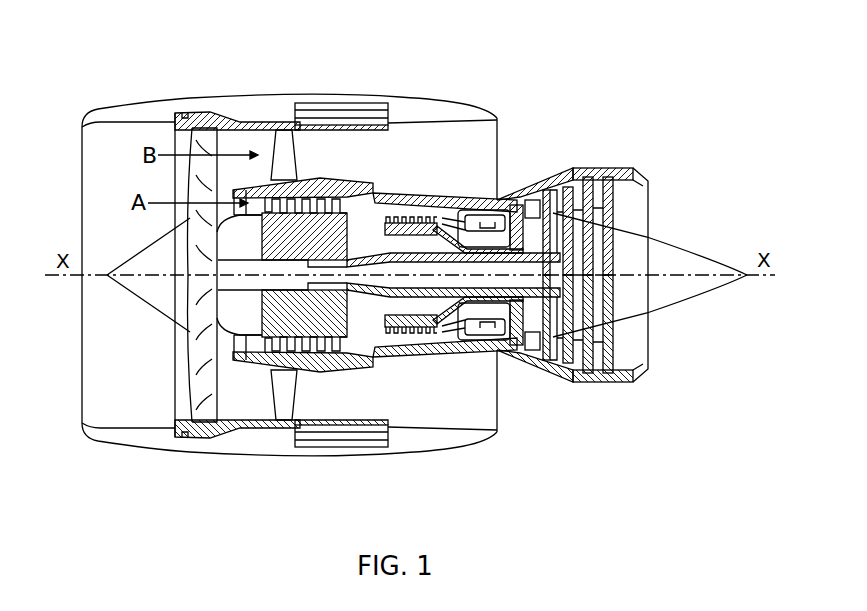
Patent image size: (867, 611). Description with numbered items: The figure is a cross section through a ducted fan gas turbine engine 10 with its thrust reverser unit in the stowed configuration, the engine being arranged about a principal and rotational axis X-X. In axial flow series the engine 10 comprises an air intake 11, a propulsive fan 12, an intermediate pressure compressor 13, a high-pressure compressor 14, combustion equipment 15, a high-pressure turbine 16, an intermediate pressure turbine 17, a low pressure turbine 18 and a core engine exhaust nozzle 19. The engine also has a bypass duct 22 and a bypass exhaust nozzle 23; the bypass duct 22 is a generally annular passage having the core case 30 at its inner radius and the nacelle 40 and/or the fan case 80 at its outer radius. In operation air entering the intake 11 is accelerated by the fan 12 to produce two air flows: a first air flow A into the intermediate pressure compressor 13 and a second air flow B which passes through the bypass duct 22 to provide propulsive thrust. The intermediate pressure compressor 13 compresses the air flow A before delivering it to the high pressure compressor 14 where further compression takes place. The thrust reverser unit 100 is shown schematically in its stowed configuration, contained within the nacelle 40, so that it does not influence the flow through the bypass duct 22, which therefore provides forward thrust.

The ducted fan gas turbine engine 10 is at (118, 70).
The air intake 11 is at (127, 121).
The propulsive fan 12 is at (193, 385).
The intermediate pressure compressor 13 is at (317, 347).
The high-pressure compressor 14 is at (413, 217).
The combustion equipment 15 is at (437, 350).
The high-pressure turbine 16 is at (510, 350).
The intermediate pressure turbine 17 is at (547, 190).
The low pressure turbine 18 is at (556, 370).
The core engine exhaust nozzle 19 is at (641, 178).
The bypass duct 22 is at (458, 160).
The bypass exhaust nozzle 23 is at (497, 122).
The core case 30 is at (347, 180).
The nacelle 40 is at (430, 110).
The fan case 80 is at (207, 124).
The thrust reverser unit 100 is at (366, 107).